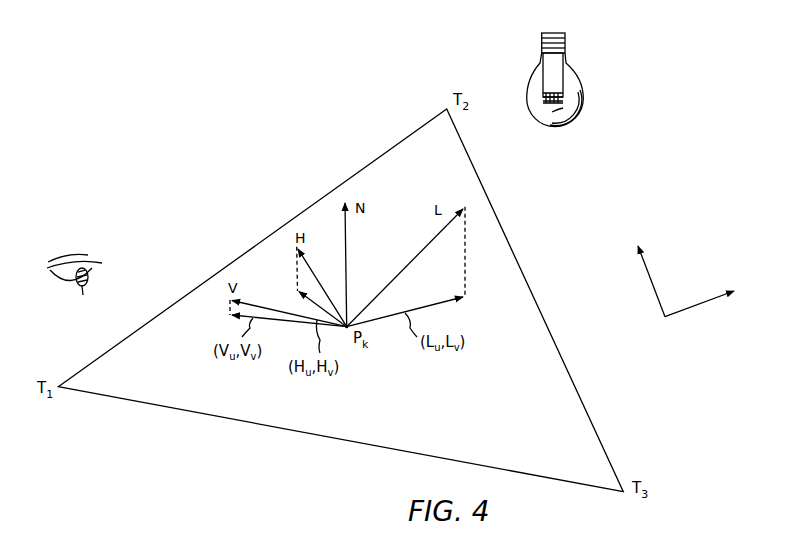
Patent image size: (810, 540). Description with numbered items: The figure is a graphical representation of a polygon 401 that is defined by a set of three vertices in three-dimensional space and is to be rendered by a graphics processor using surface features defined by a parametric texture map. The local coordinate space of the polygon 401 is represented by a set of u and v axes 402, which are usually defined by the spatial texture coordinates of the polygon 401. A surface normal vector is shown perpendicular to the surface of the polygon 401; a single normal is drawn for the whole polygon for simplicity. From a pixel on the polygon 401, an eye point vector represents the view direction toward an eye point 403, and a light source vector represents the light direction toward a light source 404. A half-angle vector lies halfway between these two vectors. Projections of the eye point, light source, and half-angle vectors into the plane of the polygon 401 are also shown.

The polygon 401 is at (343, 443).
The u and v axes 402 is at (700, 305).
The eye point 403 is at (65, 237).
The light source 404 is at (595, 88).